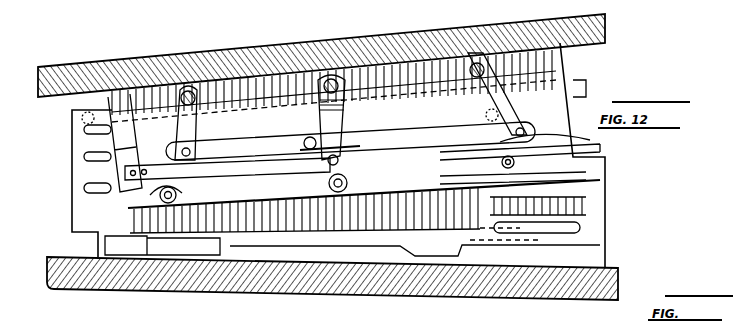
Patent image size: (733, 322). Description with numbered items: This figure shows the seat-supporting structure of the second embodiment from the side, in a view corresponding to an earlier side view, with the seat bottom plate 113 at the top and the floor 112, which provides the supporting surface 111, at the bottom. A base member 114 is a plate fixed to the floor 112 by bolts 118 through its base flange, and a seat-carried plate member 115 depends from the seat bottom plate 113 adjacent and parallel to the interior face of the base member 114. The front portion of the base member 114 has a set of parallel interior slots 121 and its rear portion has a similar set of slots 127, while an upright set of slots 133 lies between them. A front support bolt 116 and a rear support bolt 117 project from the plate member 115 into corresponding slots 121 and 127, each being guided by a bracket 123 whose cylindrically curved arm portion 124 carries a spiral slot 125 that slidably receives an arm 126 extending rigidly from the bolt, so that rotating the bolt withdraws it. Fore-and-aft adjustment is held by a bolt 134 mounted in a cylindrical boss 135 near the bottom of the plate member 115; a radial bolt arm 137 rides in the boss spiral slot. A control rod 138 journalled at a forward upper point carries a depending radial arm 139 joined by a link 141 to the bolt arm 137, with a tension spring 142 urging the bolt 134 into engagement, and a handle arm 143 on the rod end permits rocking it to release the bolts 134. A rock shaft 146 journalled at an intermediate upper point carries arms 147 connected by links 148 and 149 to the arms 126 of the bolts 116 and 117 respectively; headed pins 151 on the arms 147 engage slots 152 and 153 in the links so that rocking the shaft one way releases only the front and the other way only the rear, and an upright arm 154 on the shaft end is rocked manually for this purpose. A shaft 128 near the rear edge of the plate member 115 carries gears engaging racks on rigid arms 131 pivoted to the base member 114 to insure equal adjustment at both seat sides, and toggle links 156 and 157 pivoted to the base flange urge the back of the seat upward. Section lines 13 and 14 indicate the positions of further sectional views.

The section line 13 is at (472, 7).
The section line 14 is at (578, 7).
The supporting surface 111 is at (69, 250).
The floor 112 is at (47, 273).
The seat bottom plate 113 is at (598, 30).
The base member 114 is at (64, 211).
The seat-carried plate member 115 is at (99, 153).
The front support bolt 116 is at (178, 200).
The rear support bolt 117 is at (602, 158).
The bolt 118 is at (143, 252).
The interior slot 121 is at (97, 164).
The bracket 123 is at (585, 141).
The bracket arm portion 124 is at (168, 205).
The spiral slot 125 is at (188, 190).
The bolt arm 126 is at (150, 202).
The rear interior slot 127 is at (575, 176).
The shaft 128 is at (472, 55).
The rigid arm 131 is at (587, 85).
The upright slot 133 is at (292, 248).
The bolt 134 is at (345, 236).
The cylindrical boss 135 is at (340, 192).
The bolt arm 137 is at (316, 235).
The control rod 138 is at (186, 90).
The radial arm 139 is at (200, 133).
The link 141 is at (218, 148).
The tension spring 142 is at (174, 154).
The handle arm 143 is at (190, 31).
The rock shaft 146 is at (318, 80).
The arm 147 is at (310, 130).
The link 148 is at (166, 172).
The link 149 is at (469, 141).
The headed pin 151 is at (345, 137).
The slot 152 is at (281, 188).
The slot 153 is at (350, 146).
The arm 154 is at (325, 15).
The toggle link 156 is at (500, 238).
The toggle link 157 is at (484, 150).